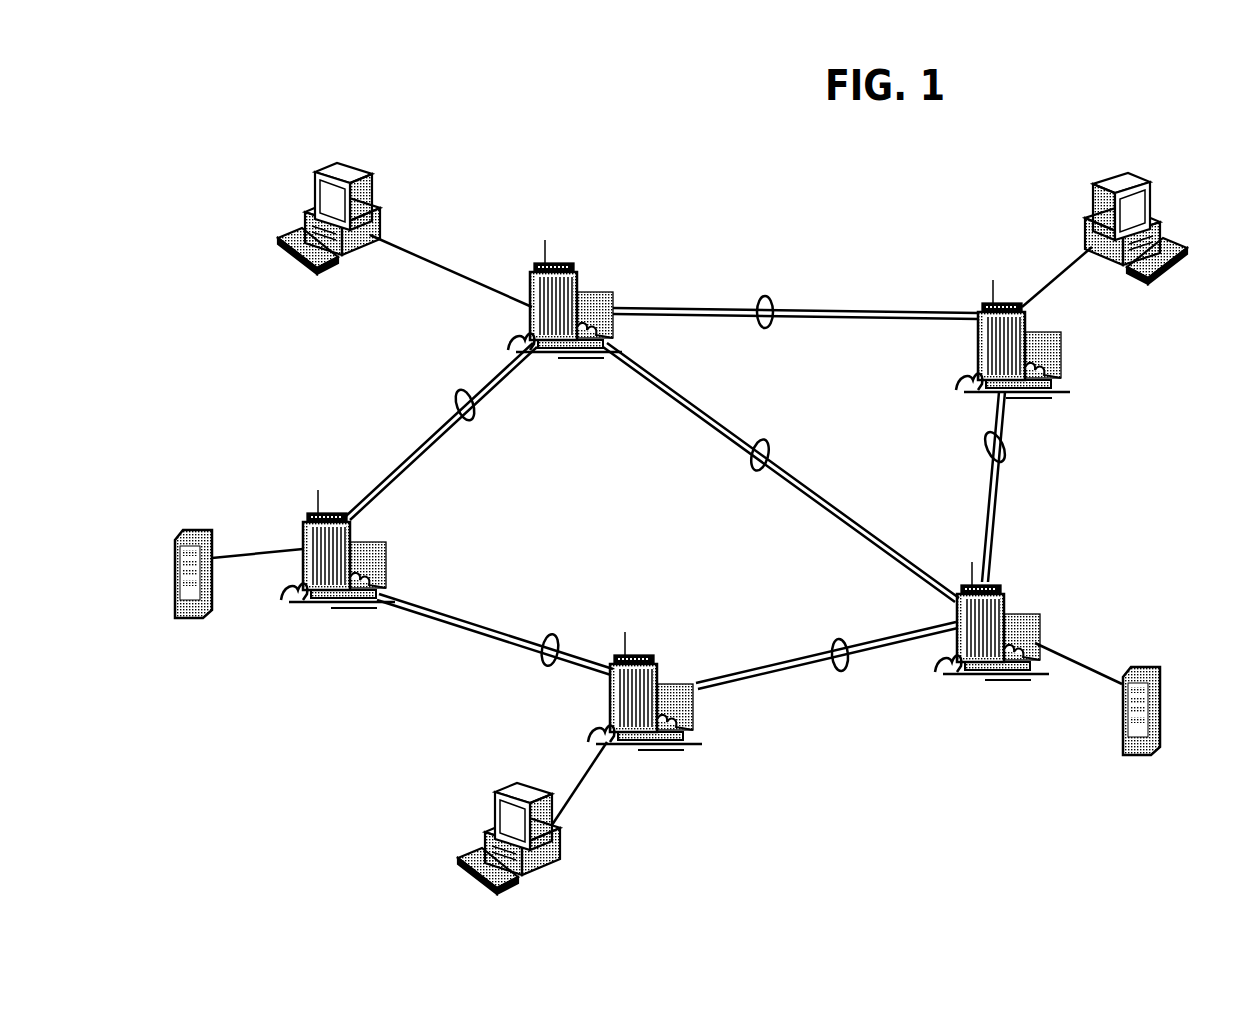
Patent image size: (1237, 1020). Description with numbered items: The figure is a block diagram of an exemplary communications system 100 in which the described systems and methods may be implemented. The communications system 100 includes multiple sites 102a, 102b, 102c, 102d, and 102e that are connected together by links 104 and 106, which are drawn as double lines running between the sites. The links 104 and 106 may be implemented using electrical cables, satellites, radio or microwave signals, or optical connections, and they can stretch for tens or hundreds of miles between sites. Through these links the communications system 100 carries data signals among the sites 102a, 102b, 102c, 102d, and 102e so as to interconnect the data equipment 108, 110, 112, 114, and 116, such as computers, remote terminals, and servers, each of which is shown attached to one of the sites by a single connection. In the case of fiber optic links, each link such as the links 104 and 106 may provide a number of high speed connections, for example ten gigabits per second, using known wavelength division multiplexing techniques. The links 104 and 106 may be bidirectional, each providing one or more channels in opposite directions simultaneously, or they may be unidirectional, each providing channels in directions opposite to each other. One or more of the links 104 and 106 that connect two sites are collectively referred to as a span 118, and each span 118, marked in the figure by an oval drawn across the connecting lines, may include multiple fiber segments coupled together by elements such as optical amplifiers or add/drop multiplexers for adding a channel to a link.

The communications system 100 is at (362, 413).
The site 102a is at (375, 558).
The site 102b is at (598, 296).
The site 102c is at (992, 352).
The site 102d is at (1015, 622).
The site 102e is at (668, 690).
The link 104 is at (498, 630).
The link 106 is at (445, 622).
The data equipment 108 is at (376, 198).
The data equipment 110 is at (210, 540).
The data equipment 112 is at (500, 811).
The data equipment 114 is at (1135, 738).
The data equipment 116 is at (1143, 268).
The span 118 is at (468, 420).